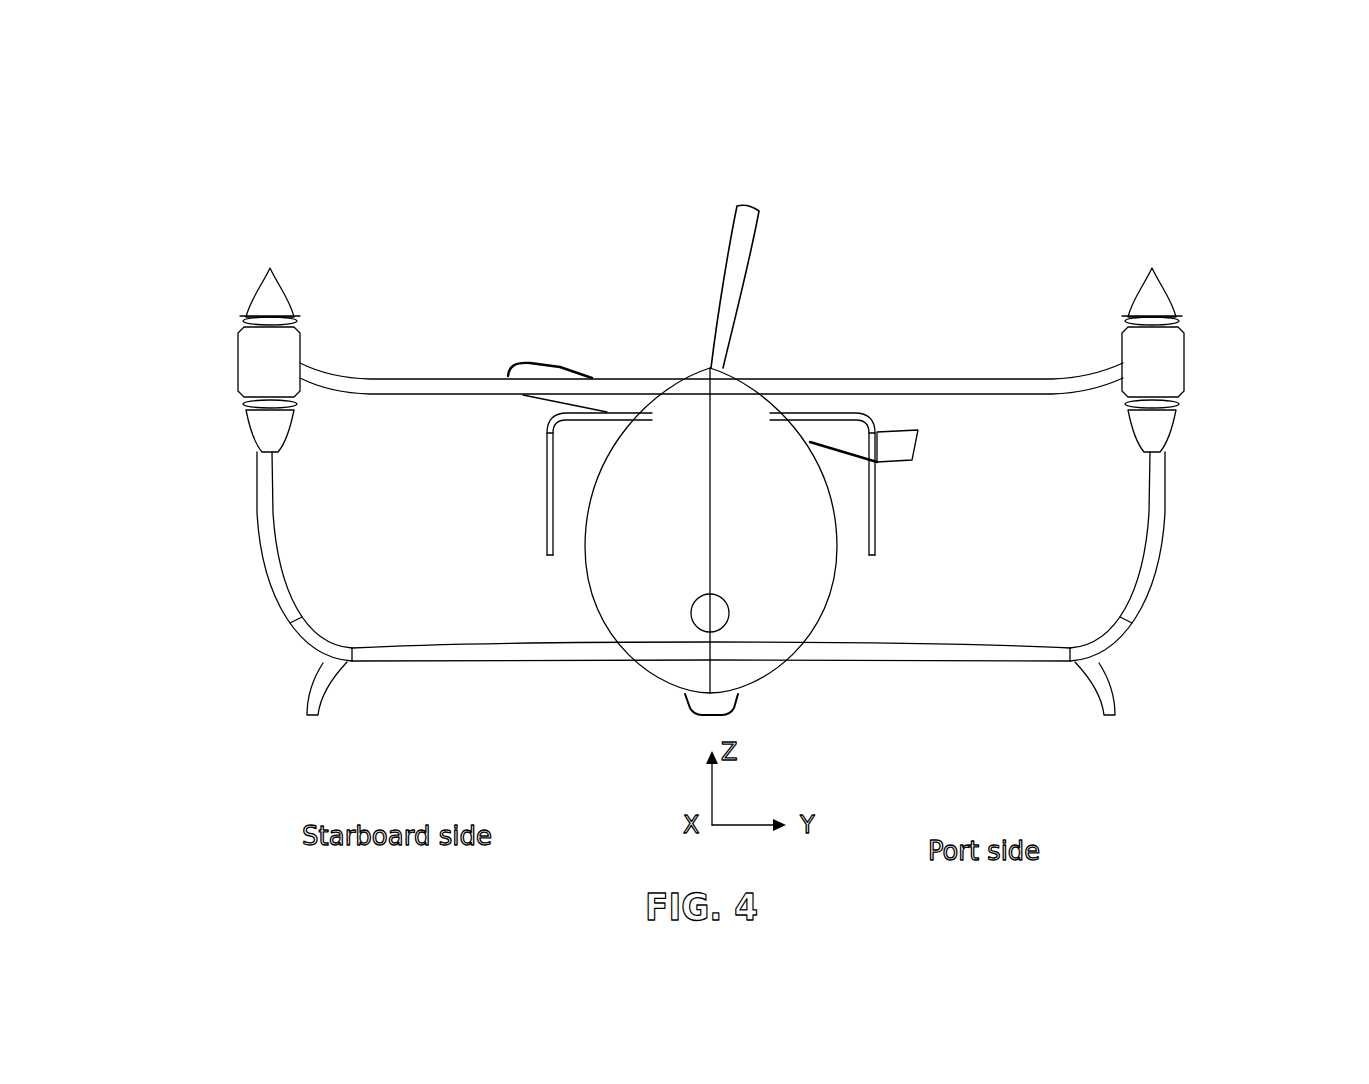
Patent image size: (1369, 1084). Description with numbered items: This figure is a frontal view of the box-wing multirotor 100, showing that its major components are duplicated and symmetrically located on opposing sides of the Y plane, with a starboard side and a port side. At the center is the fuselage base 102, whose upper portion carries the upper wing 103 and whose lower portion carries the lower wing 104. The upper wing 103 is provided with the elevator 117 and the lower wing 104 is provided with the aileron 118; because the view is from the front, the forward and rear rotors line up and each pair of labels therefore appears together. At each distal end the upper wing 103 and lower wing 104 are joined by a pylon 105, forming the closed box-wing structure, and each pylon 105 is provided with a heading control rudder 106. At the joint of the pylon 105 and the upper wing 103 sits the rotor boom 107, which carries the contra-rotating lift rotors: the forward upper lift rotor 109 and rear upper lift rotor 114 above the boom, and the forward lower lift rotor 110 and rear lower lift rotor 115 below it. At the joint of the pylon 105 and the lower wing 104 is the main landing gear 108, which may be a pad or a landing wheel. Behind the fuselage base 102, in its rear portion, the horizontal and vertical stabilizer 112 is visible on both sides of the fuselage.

The box-wing multirotor 100 is at (684, 158).
The fuselage base 102 is at (665, 716).
The upper wing 103 is at (711, 370).
The elevator 117 is at (478, 377).
The lower wing 104 is at (711, 707).
The aileron 118 is at (527, 663).
The pylon 105 is at (697, 556).
The heading control rudder 106 is at (257, 513).
The rotor boom 107 is at (322, 339).
The main landing gear 108 is at (303, 683).
The forward upper lift rotor 109 is at (695, 285).
The rear upper lift rotor 114 is at (243, 312).
The forward lower lift rotor 110 is at (701, 442).
The rear lower lift rotor 115 is at (243, 408).
The horizontal and vertical stabilizer 112 is at (547, 520).